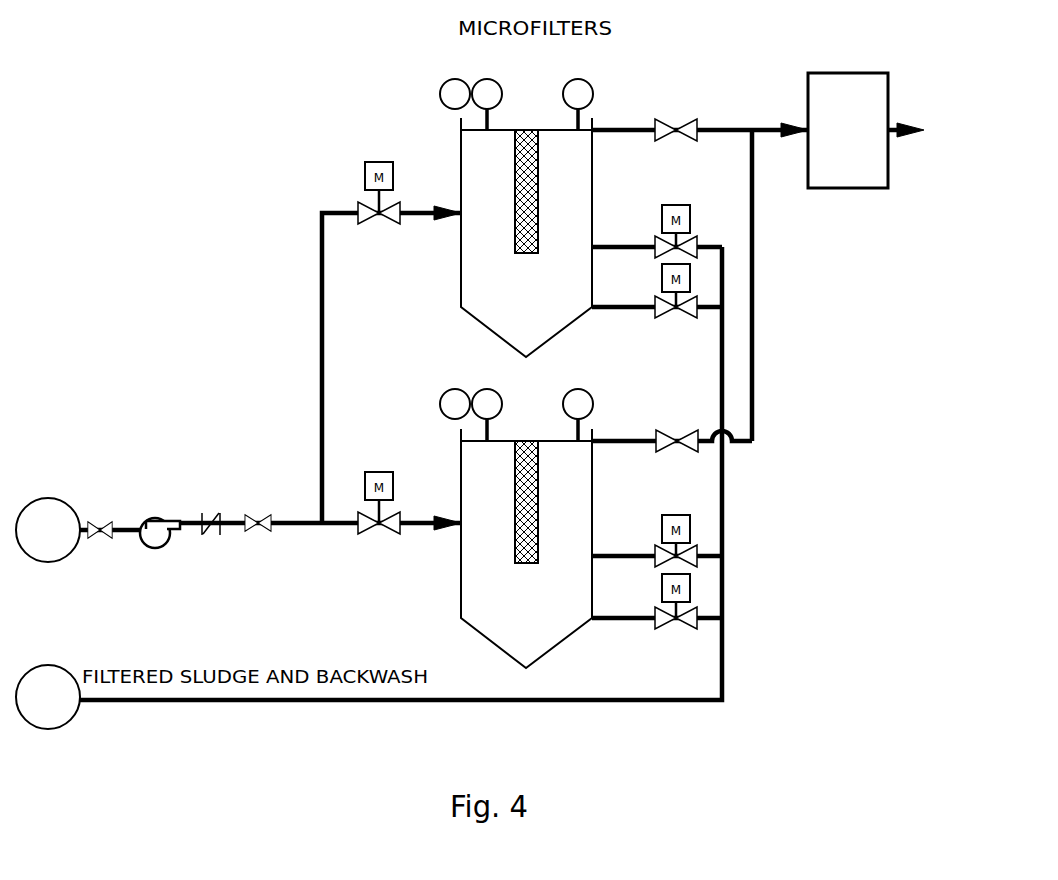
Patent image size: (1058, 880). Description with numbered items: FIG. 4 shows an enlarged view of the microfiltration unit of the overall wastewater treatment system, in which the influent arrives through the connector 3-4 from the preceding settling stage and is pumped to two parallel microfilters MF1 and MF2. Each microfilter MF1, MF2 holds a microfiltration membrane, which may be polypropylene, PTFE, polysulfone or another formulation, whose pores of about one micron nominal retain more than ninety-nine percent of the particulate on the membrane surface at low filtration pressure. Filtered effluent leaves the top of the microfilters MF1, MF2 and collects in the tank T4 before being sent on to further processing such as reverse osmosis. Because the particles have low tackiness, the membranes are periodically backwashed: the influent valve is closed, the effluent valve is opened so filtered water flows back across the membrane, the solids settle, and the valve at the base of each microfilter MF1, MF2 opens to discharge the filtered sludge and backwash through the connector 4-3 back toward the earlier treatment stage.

The microfilter 1 MF1 is at (516, 218).
The microfilter 2 MF2 is at (516, 528).
The tank T4 is at (848, 130).
The off-page connector from sheet 3 3-4 is at (48, 530).
The off-page connector to sheet 3 (filtered sludge and backwash) 4-3 is at (48, 697).